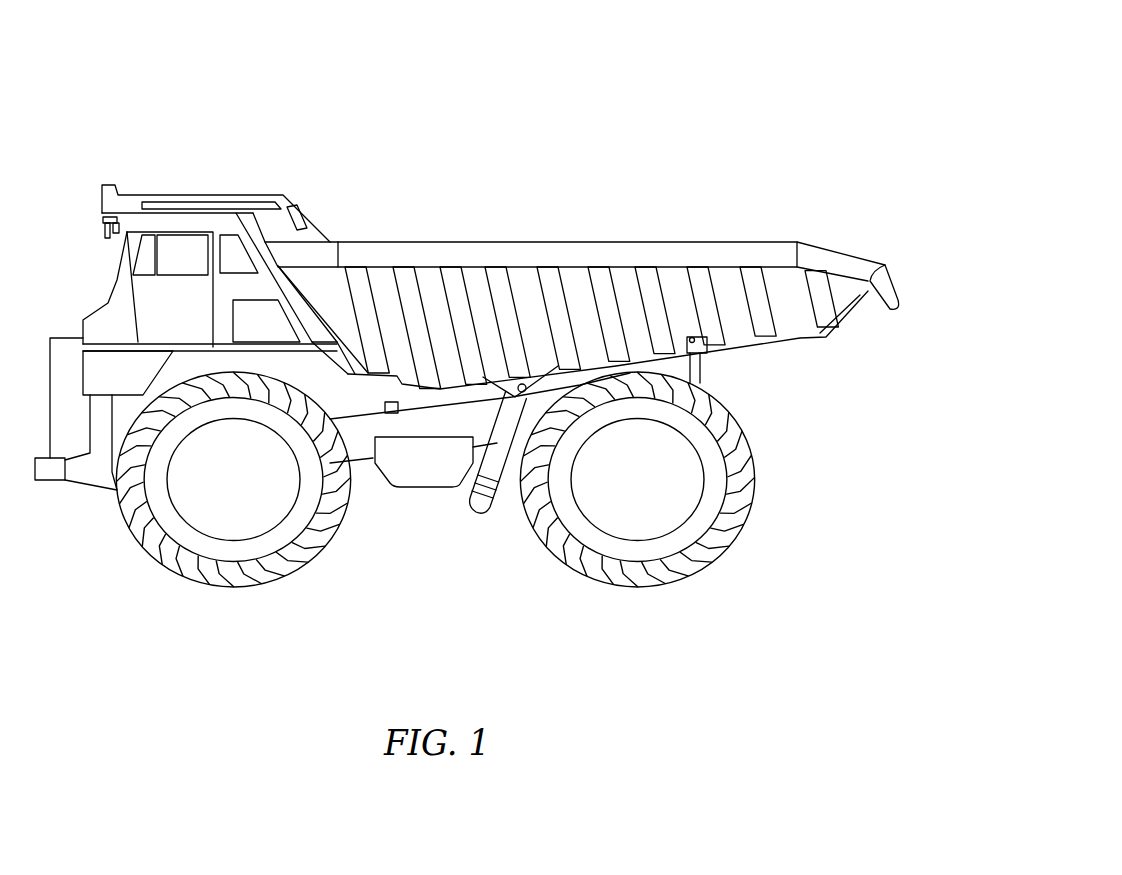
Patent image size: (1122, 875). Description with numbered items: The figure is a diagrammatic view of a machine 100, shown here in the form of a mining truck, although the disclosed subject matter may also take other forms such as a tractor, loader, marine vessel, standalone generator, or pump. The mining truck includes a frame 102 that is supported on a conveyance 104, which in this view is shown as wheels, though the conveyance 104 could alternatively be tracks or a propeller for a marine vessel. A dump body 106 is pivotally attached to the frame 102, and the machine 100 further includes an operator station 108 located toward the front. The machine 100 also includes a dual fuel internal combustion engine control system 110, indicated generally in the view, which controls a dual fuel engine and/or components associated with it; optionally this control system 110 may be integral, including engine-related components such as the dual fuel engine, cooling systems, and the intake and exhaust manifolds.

The machine 100 is at (716, 83).
The frame 102 is at (370, 488).
The conveyance 104 is at (236, 524).
The dump body 106 is at (885, 266).
The operator station 108 is at (155, 248).
The dual fuel internal combustion engine control system 110 is at (444, 522).